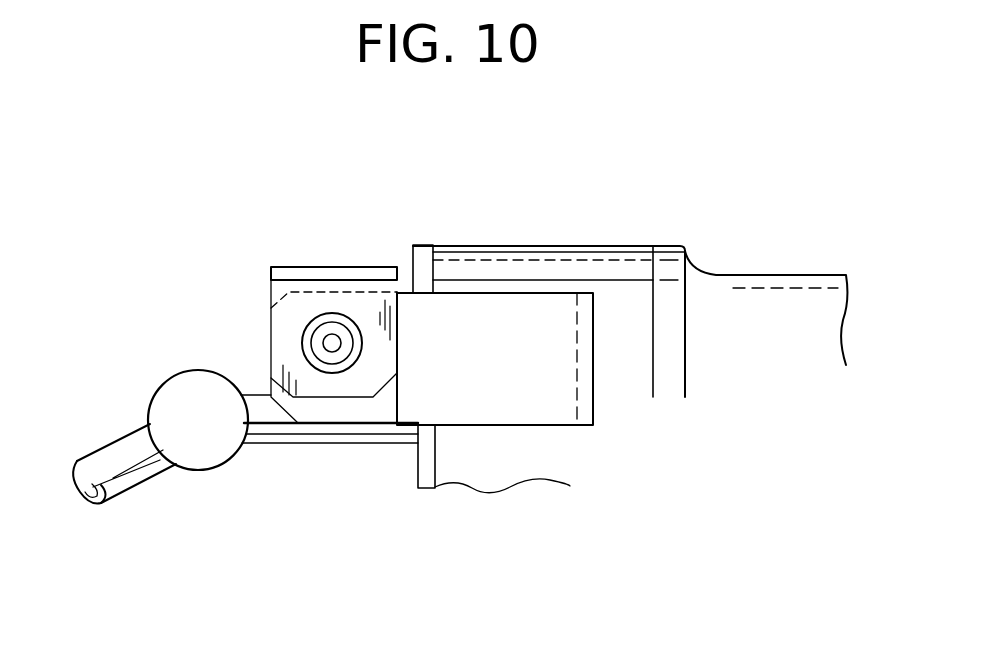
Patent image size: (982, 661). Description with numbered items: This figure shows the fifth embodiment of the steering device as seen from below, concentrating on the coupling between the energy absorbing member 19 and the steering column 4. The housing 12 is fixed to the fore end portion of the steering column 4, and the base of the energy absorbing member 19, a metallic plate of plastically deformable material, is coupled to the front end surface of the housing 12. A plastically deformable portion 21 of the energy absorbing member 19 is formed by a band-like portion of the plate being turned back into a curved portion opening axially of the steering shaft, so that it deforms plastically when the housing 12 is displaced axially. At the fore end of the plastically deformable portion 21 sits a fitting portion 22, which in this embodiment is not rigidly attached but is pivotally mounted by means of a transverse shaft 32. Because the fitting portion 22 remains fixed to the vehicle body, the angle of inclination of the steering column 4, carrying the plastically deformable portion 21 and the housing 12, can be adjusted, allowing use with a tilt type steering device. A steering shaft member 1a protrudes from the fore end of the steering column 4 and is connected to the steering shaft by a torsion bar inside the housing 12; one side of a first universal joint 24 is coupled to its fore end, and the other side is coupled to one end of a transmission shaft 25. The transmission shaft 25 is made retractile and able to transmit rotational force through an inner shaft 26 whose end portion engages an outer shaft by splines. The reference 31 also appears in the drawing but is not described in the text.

The steering shaft member 1a is at (260, 444).
The steering column 4 is at (770, 302).
The housing 12 is at (627, 270).
The energy absorbing member 19 is at (380, 266).
The plastically deformable portion 21 is at (495, 320).
The fitting portion 22 is at (299, 266).
The first universal joint 24 is at (180, 397).
The transmission shaft 25 is at (137, 488).
The inner shaft 26 is at (108, 470).
The housing end portion 31 is at (593, 366).
The transverse shaft 32 is at (333, 362).